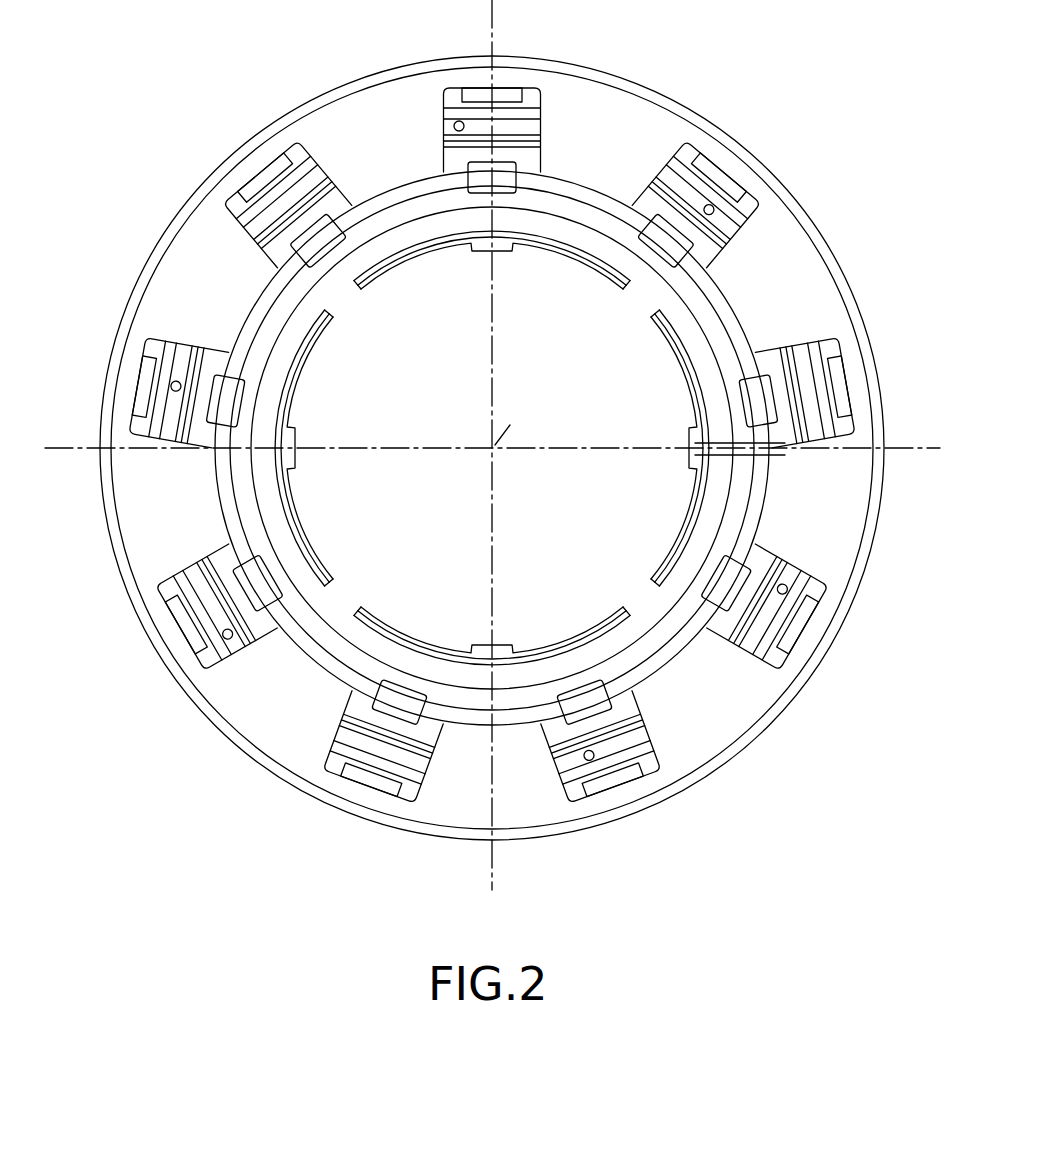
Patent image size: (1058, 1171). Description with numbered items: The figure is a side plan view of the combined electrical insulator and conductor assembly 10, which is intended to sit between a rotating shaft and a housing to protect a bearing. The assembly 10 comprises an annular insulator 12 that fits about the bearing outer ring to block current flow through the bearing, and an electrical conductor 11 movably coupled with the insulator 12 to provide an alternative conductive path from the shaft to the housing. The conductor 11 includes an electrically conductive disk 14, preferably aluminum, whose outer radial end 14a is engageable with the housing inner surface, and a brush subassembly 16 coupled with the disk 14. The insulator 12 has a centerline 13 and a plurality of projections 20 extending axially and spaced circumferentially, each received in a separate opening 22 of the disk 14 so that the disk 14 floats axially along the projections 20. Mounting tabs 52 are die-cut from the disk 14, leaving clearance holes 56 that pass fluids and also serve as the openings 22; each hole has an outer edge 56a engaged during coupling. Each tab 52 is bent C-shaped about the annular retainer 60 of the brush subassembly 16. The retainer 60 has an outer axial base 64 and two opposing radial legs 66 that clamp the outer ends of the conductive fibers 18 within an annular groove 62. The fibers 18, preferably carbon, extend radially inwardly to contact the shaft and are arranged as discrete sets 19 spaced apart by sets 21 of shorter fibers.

The combined electrical insulator and conductor assembly 10 is at (503, 445).
The electrical conductor 11 is at (503, 437).
The annular insulator 12 is at (678, 88).
The centerline 13 is at (563, 420).
The electrically conductive disk 14 is at (115, 290).
The outer radial end 14a is at (820, 218).
The brush subassembly 16 is at (454, 464).
The conductive fibers 18 is at (357, 288).
The sets of fibers 19 is at (632, 590).
The projections 20 is at (485, 403).
The sets of shorter length fibers 21 is at (560, 648).
The openings 22 is at (455, 141).
The mounting tabs 52 is at (512, 178).
The clearance hole 56 is at (528, 155).
The outer edge 56a is at (463, 88).
The annular retainer 60 is at (462, 464).
The annular groove 62 is at (487, 448).
The outer axial base 64 is at (218, 508).
The radial legs 66 is at (232, 468).